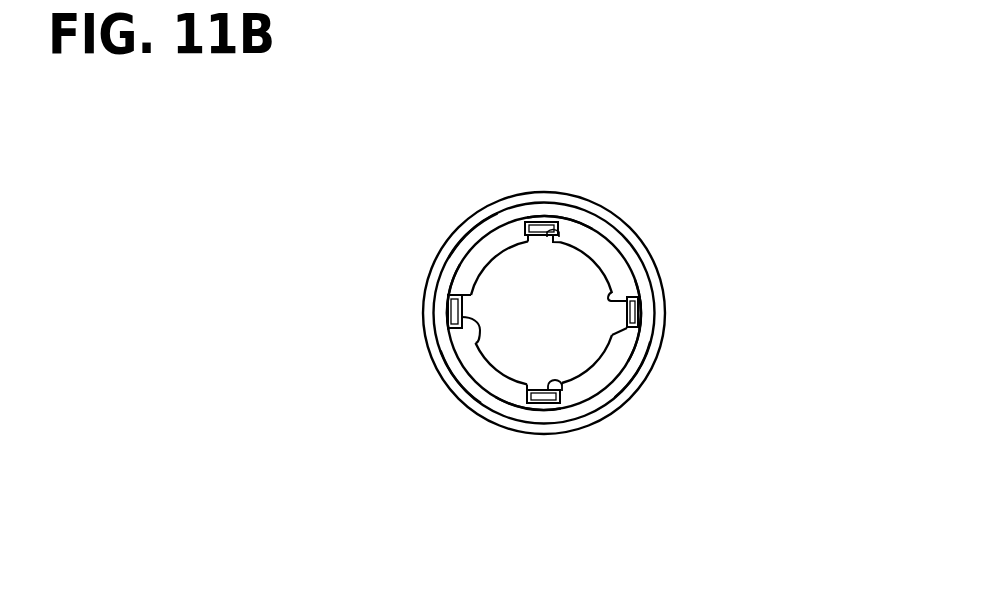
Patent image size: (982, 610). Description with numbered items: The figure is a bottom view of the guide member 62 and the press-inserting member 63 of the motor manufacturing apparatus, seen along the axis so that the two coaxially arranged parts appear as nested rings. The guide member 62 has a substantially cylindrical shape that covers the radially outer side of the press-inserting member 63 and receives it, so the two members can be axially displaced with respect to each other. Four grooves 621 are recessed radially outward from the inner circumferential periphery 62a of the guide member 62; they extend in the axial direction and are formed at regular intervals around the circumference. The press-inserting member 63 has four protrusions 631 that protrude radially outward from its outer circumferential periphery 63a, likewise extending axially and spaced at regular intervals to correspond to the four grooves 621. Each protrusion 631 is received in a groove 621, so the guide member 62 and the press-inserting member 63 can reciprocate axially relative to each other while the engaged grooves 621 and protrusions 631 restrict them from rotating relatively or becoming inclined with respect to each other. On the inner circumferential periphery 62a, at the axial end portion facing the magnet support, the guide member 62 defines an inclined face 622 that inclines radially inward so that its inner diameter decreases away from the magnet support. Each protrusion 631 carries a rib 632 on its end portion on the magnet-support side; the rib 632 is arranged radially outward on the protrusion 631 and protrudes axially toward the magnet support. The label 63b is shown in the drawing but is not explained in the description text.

The guide member 62 is at (448, 244).
The inner circumferential periphery 62a is at (475, 232).
The grooves 621 is at (561, 237).
The inclined face 622 is at (457, 382).
The press-inserting member 63 is at (612, 380).
The outer circumferential periphery 63a is at (642, 378).
The inner peripheral portion of cap member 63b is at (641, 305).
The protrusions 631 is at (528, 240).
The rib 632 is at (466, 294).